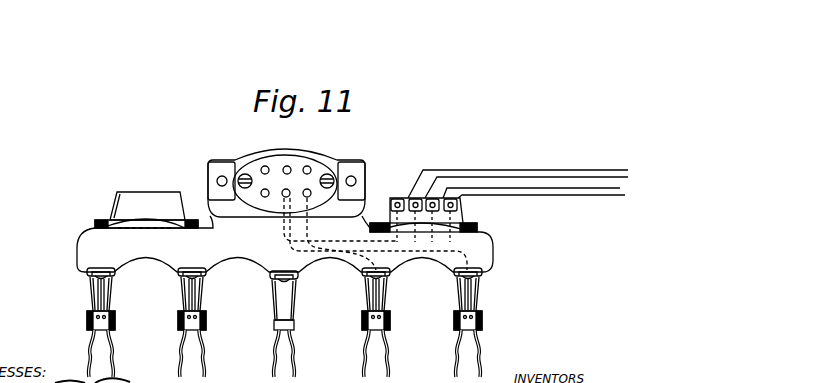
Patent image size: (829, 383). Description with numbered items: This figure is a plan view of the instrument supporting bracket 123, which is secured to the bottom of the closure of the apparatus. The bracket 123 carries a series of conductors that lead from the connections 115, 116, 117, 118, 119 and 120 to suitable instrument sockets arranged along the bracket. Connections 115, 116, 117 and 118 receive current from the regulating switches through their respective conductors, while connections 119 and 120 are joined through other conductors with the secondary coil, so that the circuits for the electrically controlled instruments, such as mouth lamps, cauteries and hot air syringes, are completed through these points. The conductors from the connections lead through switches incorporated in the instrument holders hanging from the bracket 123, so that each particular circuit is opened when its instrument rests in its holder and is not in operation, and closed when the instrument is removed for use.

The connection 115 is at (310, 168).
The connection 116 is at (310, 191).
The connection 117 is at (262, 190).
The connection 118 is at (263, 167).
The connection 119 is at (287, 166).
The connection 120 is at (288, 190).
The instrument supporting bracket 123 is at (248, 248).